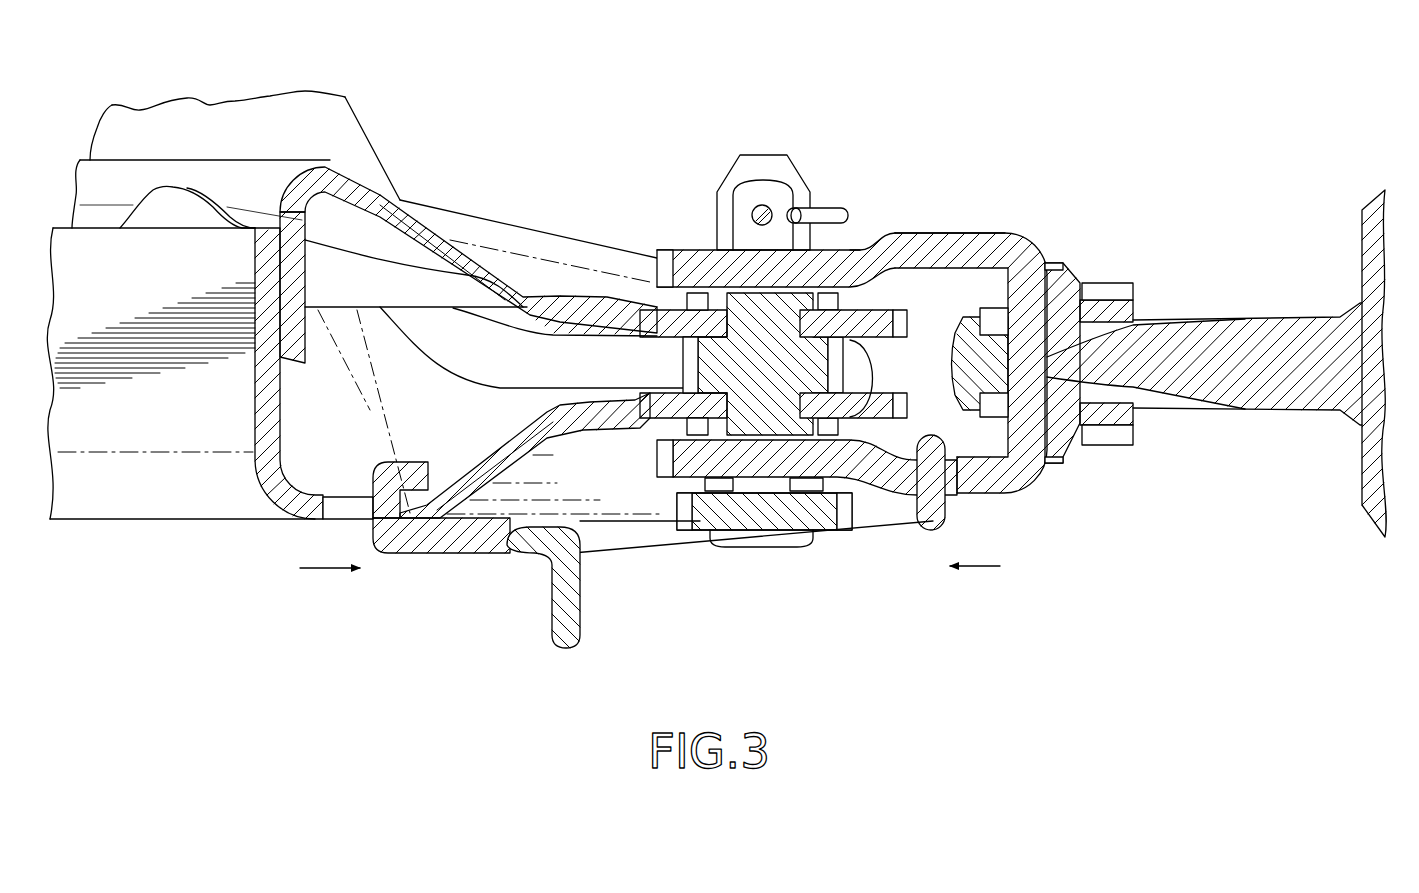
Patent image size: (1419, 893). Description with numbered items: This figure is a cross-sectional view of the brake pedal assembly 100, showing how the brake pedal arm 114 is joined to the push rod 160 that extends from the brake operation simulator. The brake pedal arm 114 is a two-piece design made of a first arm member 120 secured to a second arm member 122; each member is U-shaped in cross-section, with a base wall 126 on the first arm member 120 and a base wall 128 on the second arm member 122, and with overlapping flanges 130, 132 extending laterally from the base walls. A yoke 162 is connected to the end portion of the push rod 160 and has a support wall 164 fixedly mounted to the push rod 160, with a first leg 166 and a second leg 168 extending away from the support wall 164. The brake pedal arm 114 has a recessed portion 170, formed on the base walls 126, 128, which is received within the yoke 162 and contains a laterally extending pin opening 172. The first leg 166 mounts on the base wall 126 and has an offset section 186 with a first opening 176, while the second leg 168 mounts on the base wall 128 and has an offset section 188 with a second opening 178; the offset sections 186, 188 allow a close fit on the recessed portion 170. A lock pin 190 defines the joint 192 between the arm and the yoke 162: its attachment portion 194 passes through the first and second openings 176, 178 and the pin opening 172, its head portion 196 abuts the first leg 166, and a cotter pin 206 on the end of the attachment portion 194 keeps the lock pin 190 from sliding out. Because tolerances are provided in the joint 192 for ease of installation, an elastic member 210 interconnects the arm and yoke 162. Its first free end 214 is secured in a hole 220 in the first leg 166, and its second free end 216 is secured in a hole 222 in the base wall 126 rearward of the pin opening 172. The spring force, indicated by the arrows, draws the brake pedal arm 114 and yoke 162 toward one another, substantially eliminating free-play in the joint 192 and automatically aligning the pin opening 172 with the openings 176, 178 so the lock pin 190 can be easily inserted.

The brake pedal assembly 100 is at (232, 600).
The brake pedal arm 114 is at (103, 503).
The first arm member 120 is at (177, 482).
The second arm member 122 is at (230, 172).
The base wall 126 is at (532, 523).
The base wall 128 is at (475, 222).
The flange 130 is at (253, 417).
The flange 132 is at (292, 272).
The push rod 160 is at (1290, 318).
The yoke 162 is at (998, 232).
The support wall 164 is at (1037, 417).
The first leg 166 is at (893, 500).
The second leg 168 is at (898, 228).
The recessed portion 170 is at (581, 285).
The pin opening 172 is at (727, 293).
The first opening 176 is at (718, 497).
The second opening 178 is at (858, 245).
The offset section 186 is at (832, 492).
The offset section 188 is at (683, 247).
The lock pin 190 is at (763, 548).
The joint 192 is at (613, 480).
The attachment portion 194 is at (762, 152).
The head portion 196 is at (730, 520).
The cotter pin 206 is at (838, 200).
The elastic member 210 is at (680, 547).
The first free end 214 is at (933, 527).
The second free end 216 is at (382, 465).
The hole 220 is at (952, 478).
The hole 222 is at (343, 507).